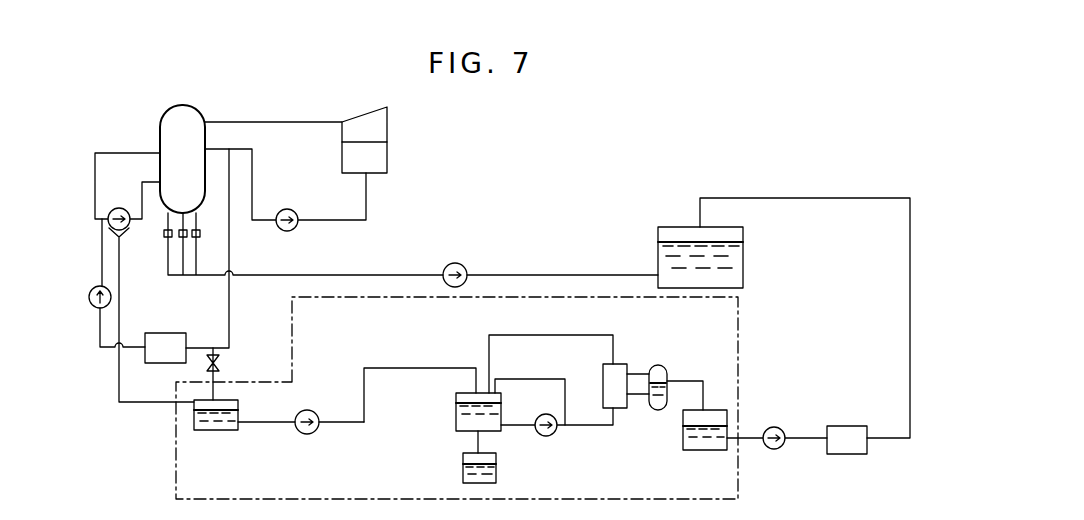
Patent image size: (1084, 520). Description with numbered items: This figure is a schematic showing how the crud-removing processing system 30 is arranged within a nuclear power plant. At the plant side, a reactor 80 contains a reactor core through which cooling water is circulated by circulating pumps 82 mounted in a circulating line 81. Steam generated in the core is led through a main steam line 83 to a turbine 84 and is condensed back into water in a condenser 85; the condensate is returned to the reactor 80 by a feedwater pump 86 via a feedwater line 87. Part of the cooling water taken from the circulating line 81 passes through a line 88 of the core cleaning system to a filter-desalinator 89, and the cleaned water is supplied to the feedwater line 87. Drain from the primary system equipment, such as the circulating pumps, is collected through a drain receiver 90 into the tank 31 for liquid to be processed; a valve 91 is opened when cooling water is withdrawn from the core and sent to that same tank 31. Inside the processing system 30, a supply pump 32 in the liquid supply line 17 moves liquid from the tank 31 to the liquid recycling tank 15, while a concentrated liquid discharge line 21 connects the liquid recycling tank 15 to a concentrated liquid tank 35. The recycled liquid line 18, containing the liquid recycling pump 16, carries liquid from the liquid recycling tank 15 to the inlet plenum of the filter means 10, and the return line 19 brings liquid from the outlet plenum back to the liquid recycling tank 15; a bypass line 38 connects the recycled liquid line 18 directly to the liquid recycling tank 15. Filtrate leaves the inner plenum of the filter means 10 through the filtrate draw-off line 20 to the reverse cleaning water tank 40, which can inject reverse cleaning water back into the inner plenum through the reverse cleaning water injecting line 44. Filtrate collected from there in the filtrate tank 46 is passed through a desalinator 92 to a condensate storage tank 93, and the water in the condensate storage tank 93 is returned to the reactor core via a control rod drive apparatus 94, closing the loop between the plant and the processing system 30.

The filter means 10 is at (618, 389).
The liquid recycling tank 15 is at (456, 405).
The liquid recycling pump 16 is at (550, 436).
The liquid supply line 17 is at (364, 400).
The recycled liquid line 18 is at (598, 426).
The return line 19 is at (565, 336).
The filtrate draw-off line 20 is at (641, 373).
The concentrated liquid discharge line 21 is at (481, 441).
The processing system 30 is at (738, 478).
The tank for receiving liquid to be processed 31 is at (215, 431).
The supply pump 32 is at (315, 434).
The concentrated liquid tank 35 is at (463, 471).
The bypass line 38 is at (530, 379).
The reverse cleaning water tank 40 is at (667, 374).
The reverse cleaning water injecting line 44 is at (641, 396).
The filtrate tank 46 is at (710, 451).
The reactor 80 is at (160, 137).
The circulating line 81 is at (95, 171).
The circulating pumps 82 is at (126, 211).
The main steam line 83 is at (232, 122).
The turbine 84 is at (387, 121).
The condenser 85 is at (387, 155).
The feedwater pump 86 is at (297, 213).
The feedwater line 87 is at (252, 171).
The line of the core cleaning system 88 is at (101, 309).
The filter-desalinator 89 is at (163, 333).
The drain receiver 90 is at (127, 234).
The valve 91 is at (220, 362).
The desalinator 92 is at (850, 455).
The condensate storage tank 93 is at (743, 258).
The control rod drive apparatus 94 is at (201, 222).